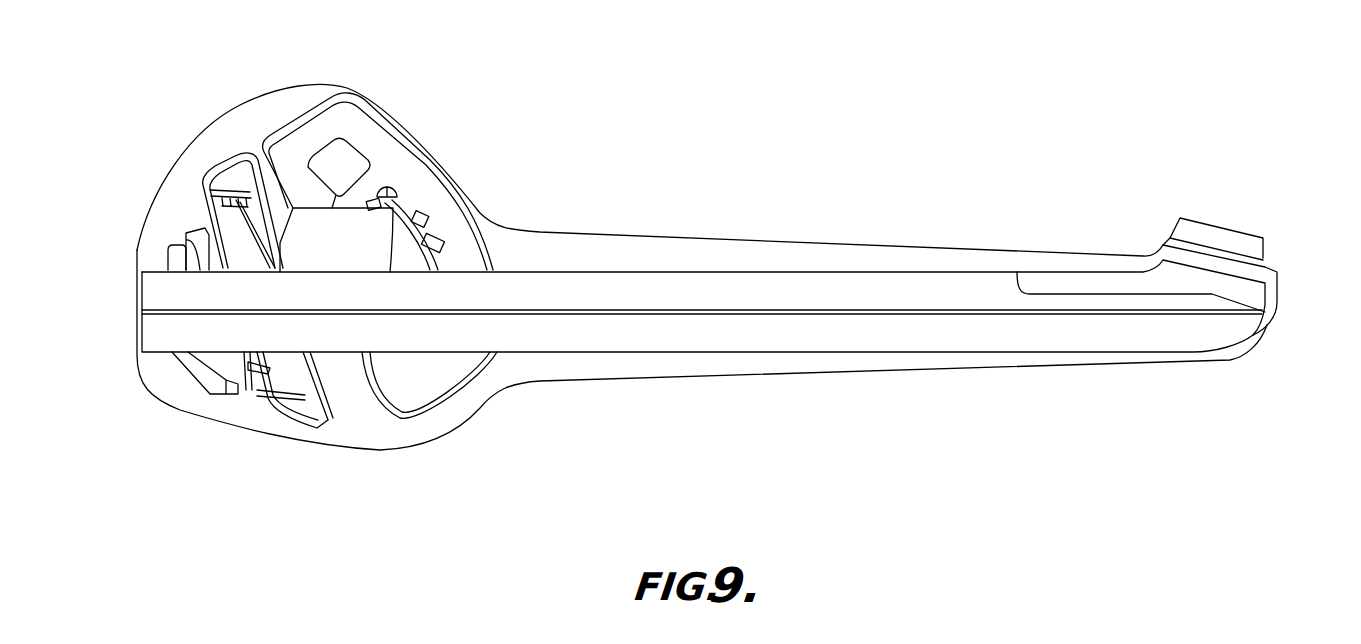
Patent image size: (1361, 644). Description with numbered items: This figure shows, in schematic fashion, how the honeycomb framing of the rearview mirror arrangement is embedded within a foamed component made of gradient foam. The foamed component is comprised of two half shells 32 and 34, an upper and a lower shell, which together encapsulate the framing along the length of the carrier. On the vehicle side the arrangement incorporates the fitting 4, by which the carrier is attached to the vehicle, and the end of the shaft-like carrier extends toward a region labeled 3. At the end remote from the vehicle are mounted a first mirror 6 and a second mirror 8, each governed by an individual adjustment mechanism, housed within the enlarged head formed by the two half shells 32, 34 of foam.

The end tab 3 is at (1264, 236).
The fitting 4 is at (1265, 291).
The first mirror 6 is at (223, 172).
The second mirror 8 is at (328, 122).
The half shell 32 is at (643, 367).
The half shell 34 is at (546, 247).